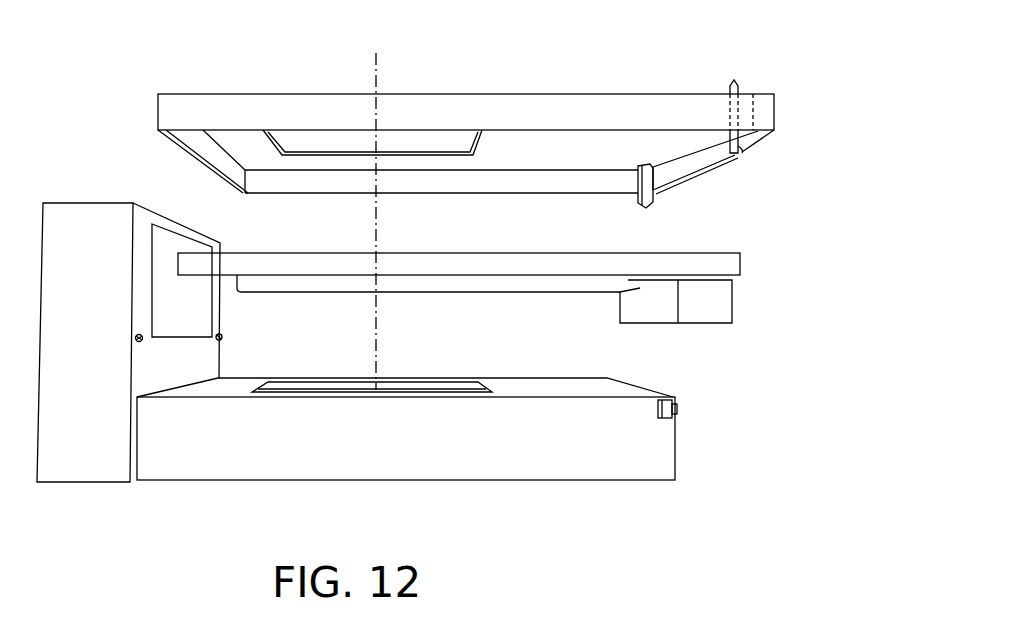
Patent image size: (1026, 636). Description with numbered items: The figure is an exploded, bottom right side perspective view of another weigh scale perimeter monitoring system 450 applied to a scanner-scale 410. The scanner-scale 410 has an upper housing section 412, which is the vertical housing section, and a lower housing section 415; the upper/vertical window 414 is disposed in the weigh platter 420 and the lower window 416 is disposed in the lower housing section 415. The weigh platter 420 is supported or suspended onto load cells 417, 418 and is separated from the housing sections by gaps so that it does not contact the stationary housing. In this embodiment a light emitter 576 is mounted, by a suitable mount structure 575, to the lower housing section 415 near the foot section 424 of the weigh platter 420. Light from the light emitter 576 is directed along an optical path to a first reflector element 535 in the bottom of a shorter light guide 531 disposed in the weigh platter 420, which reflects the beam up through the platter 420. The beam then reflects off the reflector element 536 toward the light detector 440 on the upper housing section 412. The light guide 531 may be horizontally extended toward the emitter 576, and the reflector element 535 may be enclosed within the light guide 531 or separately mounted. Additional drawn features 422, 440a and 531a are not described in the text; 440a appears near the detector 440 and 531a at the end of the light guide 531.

The weigh scale perimeter monitoring system embodiment 450 is at (105, 105).
The scanner-scale 410 is at (88, 193).
The upper housing section 412 is at (77, 462).
The upper/vertical window 414 is at (163, 242).
The lower housing section 415 is at (238, 468).
The lower window 416 is at (425, 385).
The load cell 417 is at (401, 266).
The load cell 418 is at (635, 315).
The weigh platter 420 is at (218, 88).
The opening 422 is at (352, 140).
The foot section 424 is at (710, 155).
The detector 440 is at (137, 334).
The bolt 440a is at (223, 337).
The light guide 531 is at (715, 160).
The rail end tab 531a is at (640, 200).
The reflector element 535 is at (742, 148).
The reflector element 536 is at (735, 80).
The mount structure 575 is at (660, 410).
The light emitter 576 is at (677, 408).